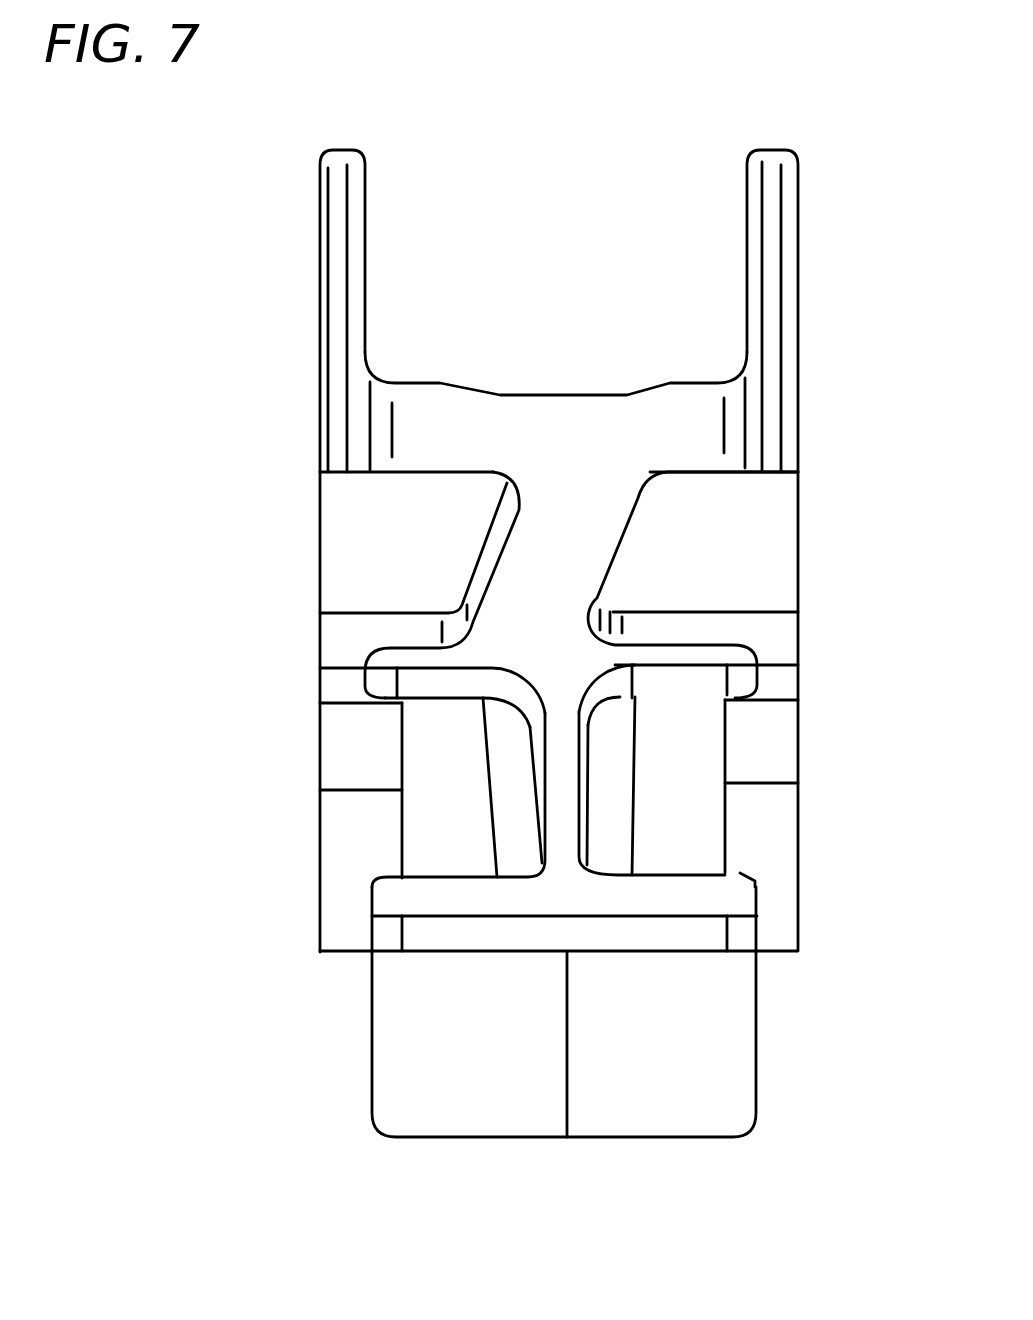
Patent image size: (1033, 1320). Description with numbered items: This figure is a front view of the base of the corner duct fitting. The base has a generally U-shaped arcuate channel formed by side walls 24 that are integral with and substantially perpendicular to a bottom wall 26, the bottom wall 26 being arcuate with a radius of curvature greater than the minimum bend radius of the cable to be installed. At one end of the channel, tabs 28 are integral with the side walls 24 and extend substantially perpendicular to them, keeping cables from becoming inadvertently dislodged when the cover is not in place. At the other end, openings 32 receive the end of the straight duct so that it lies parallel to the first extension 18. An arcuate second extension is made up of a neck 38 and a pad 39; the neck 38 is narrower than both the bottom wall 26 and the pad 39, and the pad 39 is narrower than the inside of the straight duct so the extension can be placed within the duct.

The first extension 18 is at (730, 1082).
The side walls 24 is at (783, 147).
The bottom wall 26 is at (658, 382).
The tabs 28 is at (732, 542).
The openings 32 is at (772, 738).
The neck 38 is at (567, 823).
The pad 39 is at (747, 933).